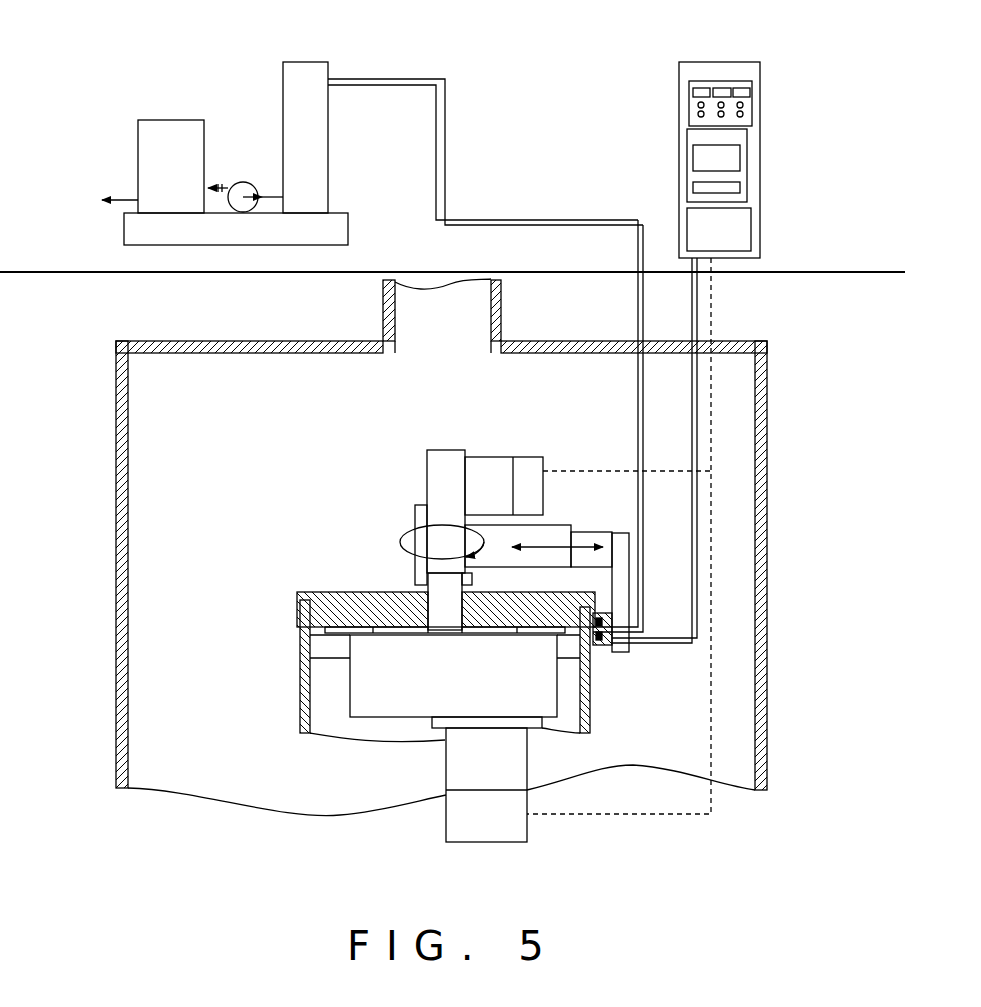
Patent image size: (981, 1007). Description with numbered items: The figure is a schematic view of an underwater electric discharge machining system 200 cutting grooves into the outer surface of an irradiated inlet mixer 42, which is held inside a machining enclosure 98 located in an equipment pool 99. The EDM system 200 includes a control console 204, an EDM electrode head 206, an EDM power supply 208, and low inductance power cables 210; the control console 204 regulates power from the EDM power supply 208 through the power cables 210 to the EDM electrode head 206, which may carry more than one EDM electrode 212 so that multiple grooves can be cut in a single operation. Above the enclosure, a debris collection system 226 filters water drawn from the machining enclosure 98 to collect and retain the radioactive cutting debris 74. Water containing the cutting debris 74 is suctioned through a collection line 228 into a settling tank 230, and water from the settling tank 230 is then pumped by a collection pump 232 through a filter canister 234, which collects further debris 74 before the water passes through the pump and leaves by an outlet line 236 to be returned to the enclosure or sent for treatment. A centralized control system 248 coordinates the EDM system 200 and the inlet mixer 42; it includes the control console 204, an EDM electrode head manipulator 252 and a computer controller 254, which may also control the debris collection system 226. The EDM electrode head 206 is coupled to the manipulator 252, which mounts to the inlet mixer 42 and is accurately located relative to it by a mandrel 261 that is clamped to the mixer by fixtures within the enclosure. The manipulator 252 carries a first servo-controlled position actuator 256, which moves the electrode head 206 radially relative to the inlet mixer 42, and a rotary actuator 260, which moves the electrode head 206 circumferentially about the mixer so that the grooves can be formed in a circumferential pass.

The irradiated inlet mixer 42 is at (306, 735).
The cutting debris 74 is at (643, 603).
The machining enclosure 98 is at (348, 338).
The equipment pool 99 is at (69, 313).
The electric discharge machining system 200 is at (640, 80).
The control console 204 is at (748, 60).
The EDM electrode head 206 is at (603, 650).
The EDM power supply 208 is at (752, 230).
The low inductance power cables 210 is at (698, 305).
The EDM electrode 212 is at (567, 640).
The debris collection system 226 is at (415, 78).
The collection line 228 is at (630, 218).
The settling tank 230 is at (310, 60).
The collection pump 232 is at (243, 182).
The filter canister 234 is at (140, 115).
The outlet line 236 is at (128, 200).
The centralized control system 248 is at (679, 160).
The EDM electrode head manipulator 252 is at (530, 440).
The computer controller 254 is at (740, 157).
The first servo-controlled position actuator 256 is at (427, 440).
The rotary actuator 260 is at (430, 822).
The mandrel 261 is at (330, 592).